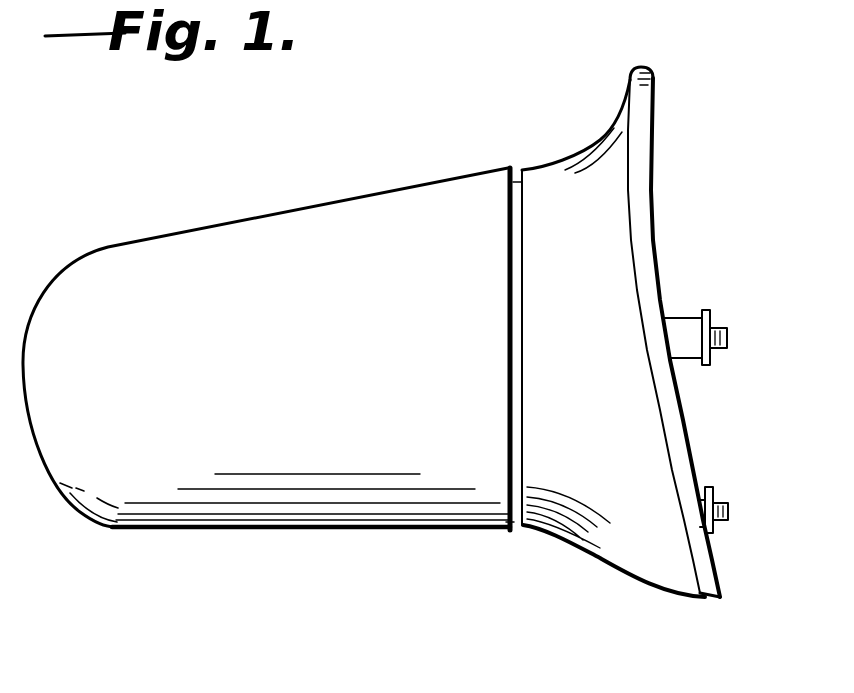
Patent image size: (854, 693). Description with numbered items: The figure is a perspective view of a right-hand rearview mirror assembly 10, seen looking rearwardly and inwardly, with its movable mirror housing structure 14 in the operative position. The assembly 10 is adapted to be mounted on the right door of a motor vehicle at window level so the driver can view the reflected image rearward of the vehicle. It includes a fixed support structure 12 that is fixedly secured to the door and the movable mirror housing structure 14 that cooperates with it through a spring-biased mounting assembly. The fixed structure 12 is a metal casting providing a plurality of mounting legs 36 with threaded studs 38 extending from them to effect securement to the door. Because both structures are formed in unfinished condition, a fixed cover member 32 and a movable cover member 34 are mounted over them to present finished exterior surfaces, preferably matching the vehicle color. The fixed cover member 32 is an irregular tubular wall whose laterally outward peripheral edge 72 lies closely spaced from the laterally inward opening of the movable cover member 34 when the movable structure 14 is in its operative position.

The rearview mirror assembly 10 is at (291, 186).
The fixed support structure 12 is at (683, 318).
The movable mirror housing structure 14 is at (512, 531).
The fixed cover member 32 is at (653, 564).
The movable cover member 34 is at (141, 486).
The mounting legs 36 is at (688, 355).
The threaded studs 38 is at (716, 328).
The laterally outward peripheral edge 72 is at (518, 347).